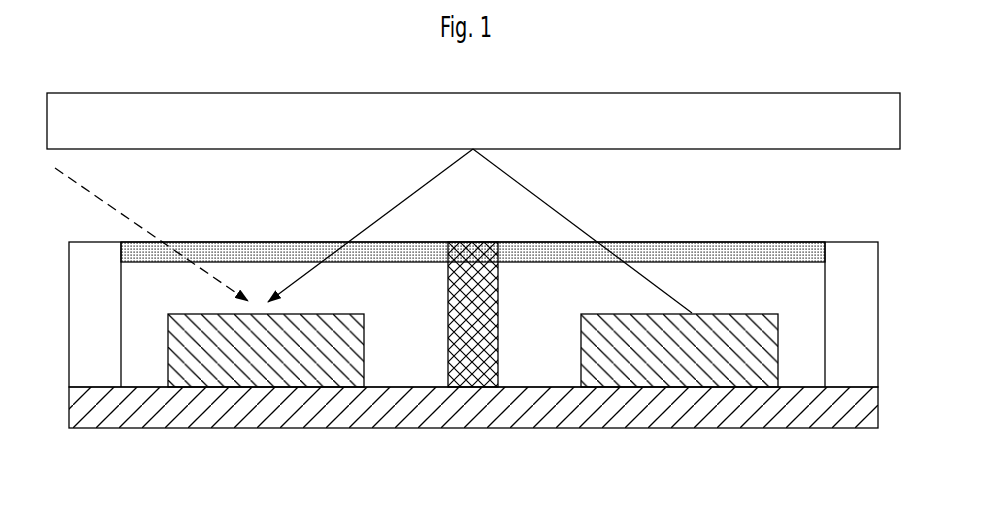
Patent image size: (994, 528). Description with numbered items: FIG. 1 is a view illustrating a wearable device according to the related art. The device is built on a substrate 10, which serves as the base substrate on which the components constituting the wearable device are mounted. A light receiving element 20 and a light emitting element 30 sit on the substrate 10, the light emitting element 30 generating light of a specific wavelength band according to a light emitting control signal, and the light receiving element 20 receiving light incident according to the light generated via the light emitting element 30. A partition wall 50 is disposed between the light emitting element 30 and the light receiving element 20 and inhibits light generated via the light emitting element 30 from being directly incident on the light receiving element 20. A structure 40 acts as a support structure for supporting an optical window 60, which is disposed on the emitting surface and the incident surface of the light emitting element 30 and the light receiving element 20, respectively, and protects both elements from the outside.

The substrate 10 is at (395, 423).
The light receiving element 20 is at (265, 377).
The light emitting element 30 is at (668, 378).
The structure 40 is at (850, 378).
The partition wall 50 is at (477, 385).
The optical window 60 is at (733, 250).